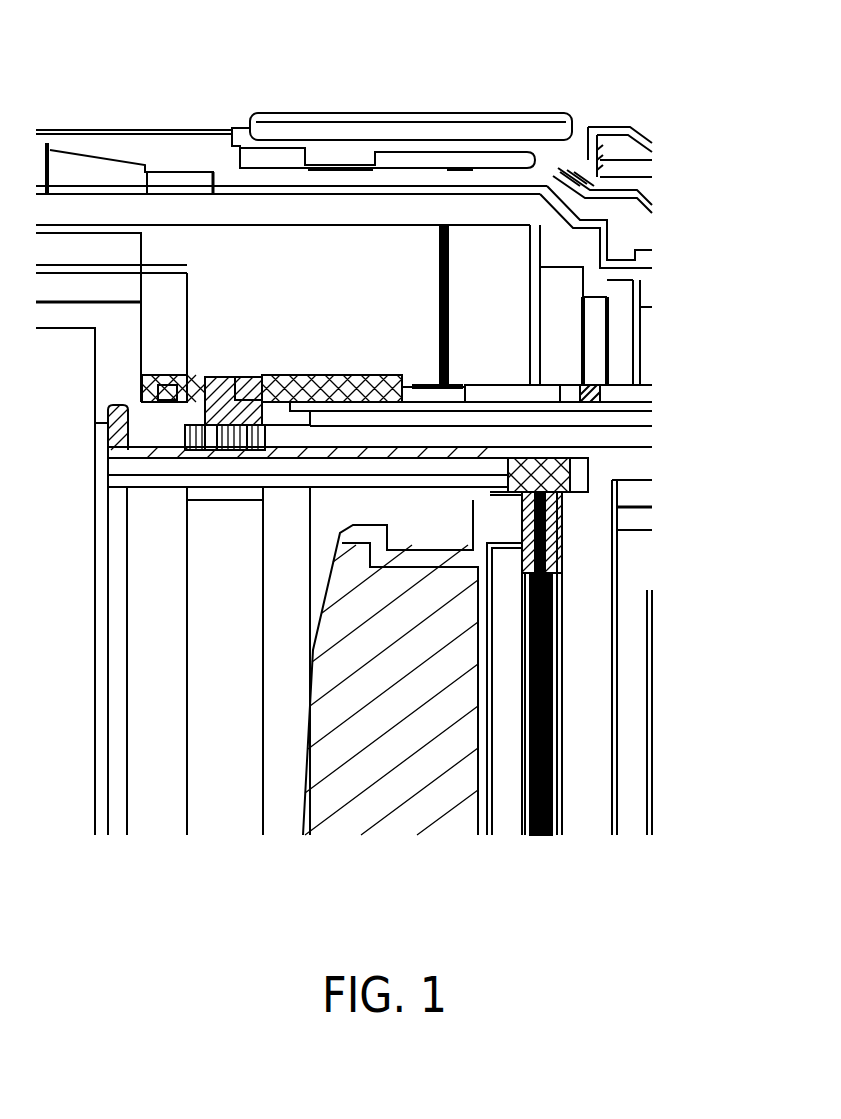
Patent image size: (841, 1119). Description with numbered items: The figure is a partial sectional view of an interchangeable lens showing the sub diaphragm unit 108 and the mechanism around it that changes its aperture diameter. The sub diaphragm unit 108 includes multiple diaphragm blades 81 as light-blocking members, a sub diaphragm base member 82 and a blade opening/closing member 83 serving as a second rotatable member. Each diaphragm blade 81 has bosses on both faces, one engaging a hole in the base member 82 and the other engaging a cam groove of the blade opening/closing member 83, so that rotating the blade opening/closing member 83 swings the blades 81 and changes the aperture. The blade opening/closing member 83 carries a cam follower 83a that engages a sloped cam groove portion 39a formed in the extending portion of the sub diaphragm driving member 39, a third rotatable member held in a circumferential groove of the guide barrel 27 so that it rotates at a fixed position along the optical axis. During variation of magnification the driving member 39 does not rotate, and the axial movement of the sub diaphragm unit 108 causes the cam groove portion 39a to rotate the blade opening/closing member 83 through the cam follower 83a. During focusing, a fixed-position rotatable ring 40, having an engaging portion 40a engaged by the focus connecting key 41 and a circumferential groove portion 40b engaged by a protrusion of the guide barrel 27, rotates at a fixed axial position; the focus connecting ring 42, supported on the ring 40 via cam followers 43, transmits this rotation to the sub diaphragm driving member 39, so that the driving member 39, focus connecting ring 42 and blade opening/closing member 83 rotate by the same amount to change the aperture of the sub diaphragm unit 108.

The guide barrel 27 is at (55, 312).
The sub diaphragm driving member 39 is at (117, 443).
The cam groove portion 39a is at (392, 467).
The fixed-position rotatable ring 40 is at (371, 393).
The engaging portion 40a is at (425, 392).
The circumferential groove portion 40b is at (163, 397).
The focus connecting key 41 is at (488, 395).
The focus connecting ring 42 is at (212, 380).
The cam followers 43 is at (248, 380).
The diaphragm blades 81 is at (550, 592).
The sub diaphragm base member 82 is at (552, 523).
The blade opening/closing member 83 is at (523, 508).
The cam follower 83a is at (550, 467).
The sub diaphragm unit 108 is at (557, 650).